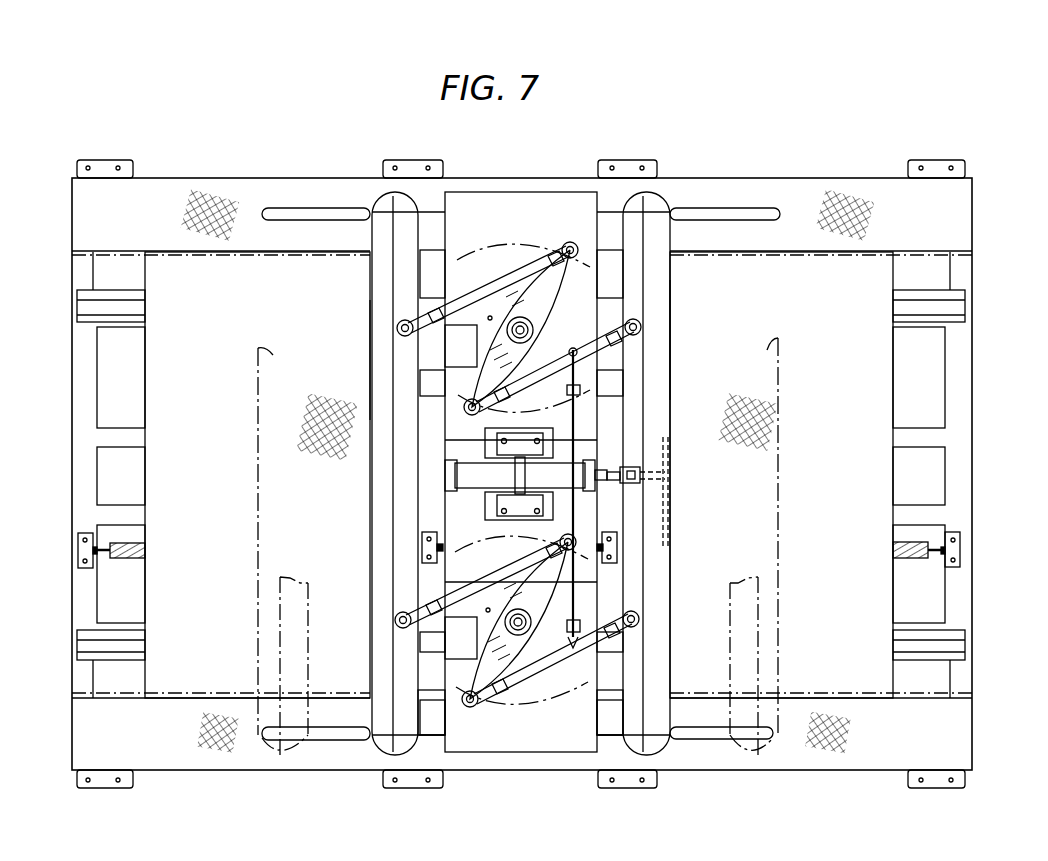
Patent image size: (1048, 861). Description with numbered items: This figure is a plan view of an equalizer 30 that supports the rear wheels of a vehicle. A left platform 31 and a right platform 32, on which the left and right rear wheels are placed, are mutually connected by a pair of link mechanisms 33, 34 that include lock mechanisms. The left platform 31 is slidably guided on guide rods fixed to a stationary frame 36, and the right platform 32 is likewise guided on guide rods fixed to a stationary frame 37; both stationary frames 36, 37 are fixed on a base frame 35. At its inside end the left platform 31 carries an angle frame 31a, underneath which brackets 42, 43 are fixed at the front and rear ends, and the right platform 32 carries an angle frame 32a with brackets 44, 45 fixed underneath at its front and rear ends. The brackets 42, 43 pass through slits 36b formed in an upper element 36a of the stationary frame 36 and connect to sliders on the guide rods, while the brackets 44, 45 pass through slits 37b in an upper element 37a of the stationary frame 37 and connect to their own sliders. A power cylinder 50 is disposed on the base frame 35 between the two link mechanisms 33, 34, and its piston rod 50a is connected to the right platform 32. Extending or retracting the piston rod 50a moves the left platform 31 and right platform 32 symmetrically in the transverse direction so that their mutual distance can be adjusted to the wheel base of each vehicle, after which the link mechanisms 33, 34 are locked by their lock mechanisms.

The equalizer 30 is at (995, 160).
The left platform 31 is at (260, 268).
The angle frame 31a is at (390, 358).
The right platform 32 is at (805, 272).
The angle frame 32a is at (640, 297).
The link mechanism 33 is at (521, 694).
The link mechanism 34 is at (507, 265).
The base frame 35 is at (553, 770).
The stationary frame 36 is at (85, 430).
The upper element 36a is at (192, 190).
The slits 36b is at (330, 215).
The stationary frame 37 is at (958, 444).
The upper element 37a is at (842, 190).
The slits 37b is at (735, 212).
The bracket 42 is at (432, 733).
The bracket 43 is at (445, 202).
The bracket 44 is at (608, 735).
The bracket 45 is at (598, 210).
The power cylinder 50 is at (567, 457).
The piston rod 50a is at (607, 485).